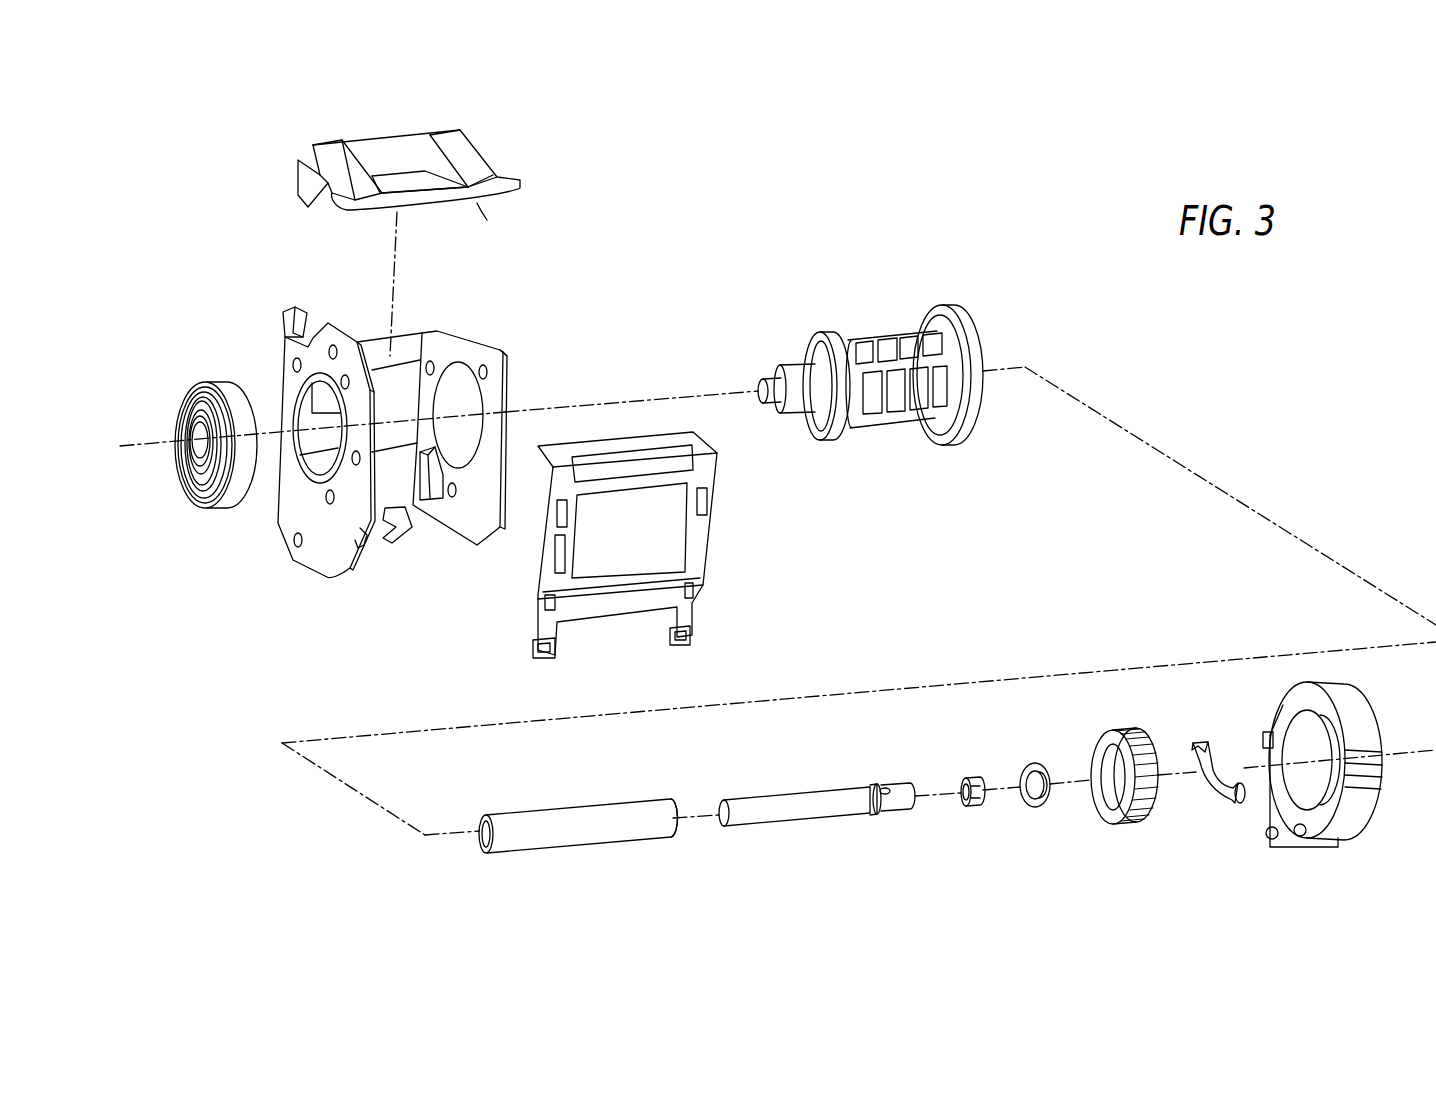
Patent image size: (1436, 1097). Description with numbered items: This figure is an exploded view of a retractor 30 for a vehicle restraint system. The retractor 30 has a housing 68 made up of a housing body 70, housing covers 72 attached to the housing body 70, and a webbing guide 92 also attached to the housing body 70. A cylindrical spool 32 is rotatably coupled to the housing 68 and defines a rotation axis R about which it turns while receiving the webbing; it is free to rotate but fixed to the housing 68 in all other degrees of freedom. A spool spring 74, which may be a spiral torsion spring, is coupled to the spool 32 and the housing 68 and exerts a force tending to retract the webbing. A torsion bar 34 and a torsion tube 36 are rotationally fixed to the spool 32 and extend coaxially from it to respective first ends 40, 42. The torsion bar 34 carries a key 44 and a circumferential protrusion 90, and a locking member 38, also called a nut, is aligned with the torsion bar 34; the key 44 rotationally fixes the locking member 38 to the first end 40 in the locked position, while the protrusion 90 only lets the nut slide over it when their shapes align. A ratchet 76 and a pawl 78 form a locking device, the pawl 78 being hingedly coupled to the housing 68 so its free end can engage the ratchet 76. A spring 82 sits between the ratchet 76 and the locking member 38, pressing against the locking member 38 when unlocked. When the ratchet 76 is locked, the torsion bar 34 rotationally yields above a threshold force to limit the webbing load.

The retractor 30 is at (185, 171).
The spool 32 is at (878, 332).
The torsion bar 34 is at (752, 825).
The torsion tube 36 is at (530, 850).
The locking member 38 is at (973, 807).
The first end 40 is at (912, 790).
The first end 42 is at (673, 803).
The key 44 is at (884, 790).
The housing 68 is at (560, 445).
The housing body 70 is at (457, 333).
The housing covers 72 is at (717, 490).
The spool spring 74 is at (213, 513).
The ratchet 76 is at (1123, 817).
The pawl 78 is at (1225, 803).
The spring 82 is at (1038, 807).
The circumferential protrusion 90 is at (873, 817).
The webbing guide 92 is at (497, 177).
The rotation axis R is at (648, 398).